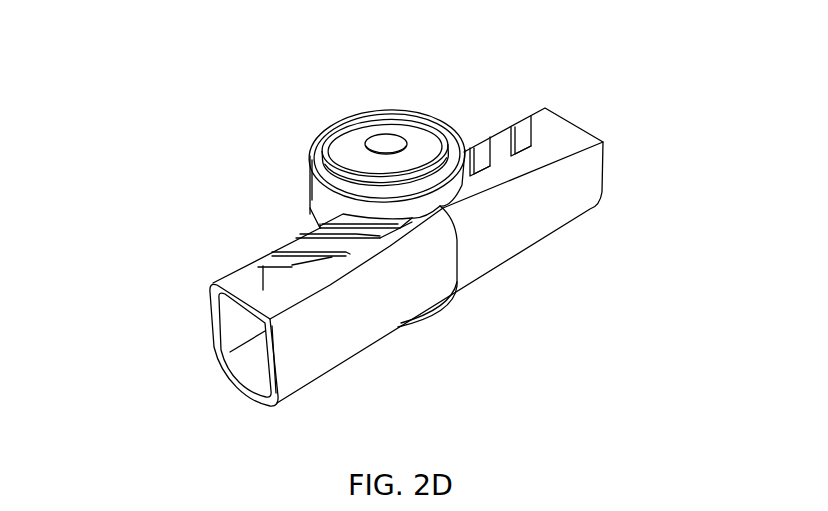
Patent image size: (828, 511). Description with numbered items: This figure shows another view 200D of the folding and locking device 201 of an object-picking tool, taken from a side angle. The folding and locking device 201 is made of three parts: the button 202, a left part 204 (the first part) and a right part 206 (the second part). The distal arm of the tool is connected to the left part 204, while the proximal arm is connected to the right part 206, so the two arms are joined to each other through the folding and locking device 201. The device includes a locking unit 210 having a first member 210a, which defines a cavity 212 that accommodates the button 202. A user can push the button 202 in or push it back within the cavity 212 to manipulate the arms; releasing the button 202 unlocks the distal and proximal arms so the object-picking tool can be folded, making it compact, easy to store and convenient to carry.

The view 200D is at (185, 58).
The folding and locking device 201 is at (596, 137).
The button 202 is at (430, 150).
The left part 204 is at (262, 262).
The right part 206 is at (545, 148).
The locking unit 210 is at (316, 108).
The first member 210a is at (345, 120).
The cavity 212 is at (317, 135).